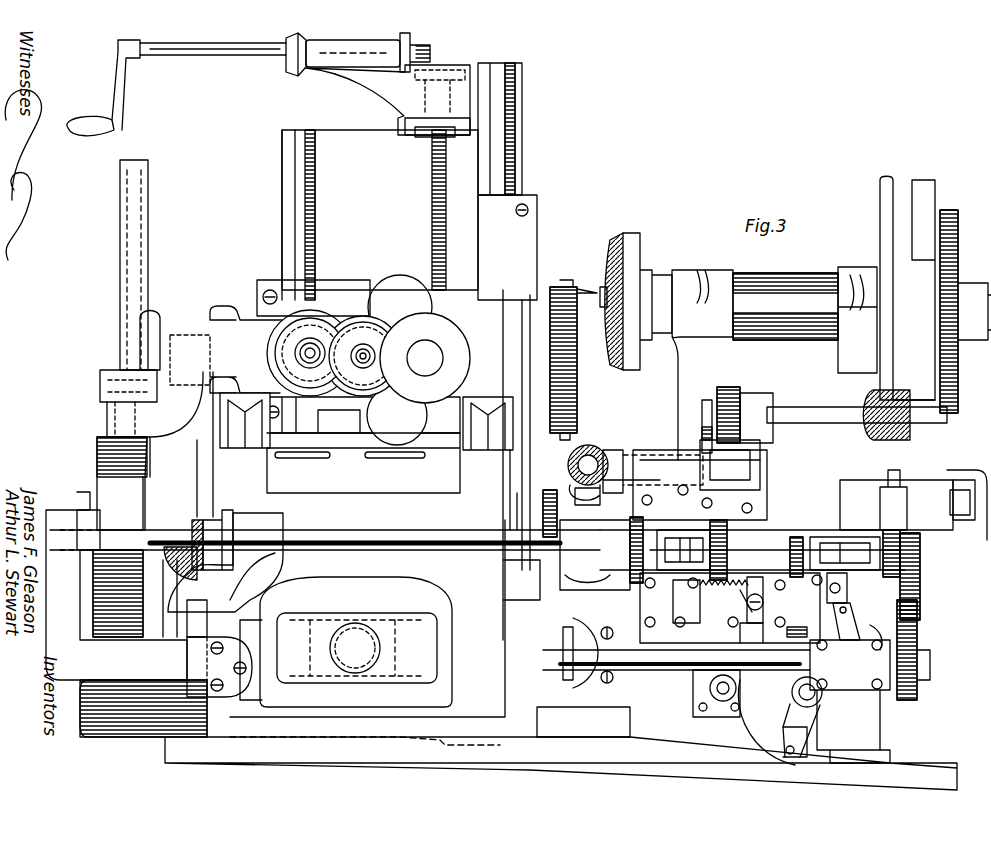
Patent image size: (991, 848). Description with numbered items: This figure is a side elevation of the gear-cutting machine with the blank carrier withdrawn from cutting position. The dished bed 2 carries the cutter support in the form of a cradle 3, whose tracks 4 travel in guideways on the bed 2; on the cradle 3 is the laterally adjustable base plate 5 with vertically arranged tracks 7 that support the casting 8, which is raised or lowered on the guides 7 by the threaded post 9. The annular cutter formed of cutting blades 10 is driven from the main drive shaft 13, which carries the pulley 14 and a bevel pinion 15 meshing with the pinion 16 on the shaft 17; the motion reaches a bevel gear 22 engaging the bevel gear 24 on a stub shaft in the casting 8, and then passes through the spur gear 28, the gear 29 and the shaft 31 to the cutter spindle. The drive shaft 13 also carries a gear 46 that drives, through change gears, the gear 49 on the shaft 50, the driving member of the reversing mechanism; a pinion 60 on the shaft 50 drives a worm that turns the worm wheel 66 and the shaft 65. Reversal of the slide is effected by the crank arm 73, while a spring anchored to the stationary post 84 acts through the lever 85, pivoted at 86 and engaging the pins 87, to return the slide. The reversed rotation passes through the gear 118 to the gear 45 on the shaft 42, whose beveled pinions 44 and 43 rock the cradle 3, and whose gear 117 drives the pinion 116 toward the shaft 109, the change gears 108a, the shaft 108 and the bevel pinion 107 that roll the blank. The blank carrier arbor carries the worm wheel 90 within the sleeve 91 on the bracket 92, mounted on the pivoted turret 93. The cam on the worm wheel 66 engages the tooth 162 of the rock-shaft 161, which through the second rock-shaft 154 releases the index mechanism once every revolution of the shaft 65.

The dished bed 2 is at (438, 490).
The cradle 3 is at (363, 463).
The tracks 4 is at (366, 421).
The base plate 5 is at (380, 210).
The vertically arranged tracks 7 is at (500, 178).
The casting 8 is at (335, 360).
The threaded post 9 is at (440, 196).
The cutting blades 10 is at (580, 434).
The main drive shaft 13 is at (160, 528).
The pulley 14 is at (120, 537).
The bevel pinion 15 is at (210, 518).
The pinion 16 is at (185, 570).
The shaft 17 is at (200, 600).
The bevel gear 22 is at (105, 375).
The bevel gear 24 is at (160, 322).
The spur gear 28 is at (310, 340).
The gear 29 is at (363, 356).
The shaft 31 is at (425, 355).
The shaft 42 is at (668, 660).
The beveled pinion 43 is at (355, 625).
The beveled pinion 44 is at (378, 628).
The gear 45 is at (905, 697).
The gear 46 is at (645, 520).
The gear 49 is at (550, 495).
The shaft 50 is at (770, 548).
The pinion 60 is at (905, 548).
The shaft 65 is at (815, 697).
The worm wheel 66 is at (779, 722).
The crank arm 73 is at (850, 608).
The stationary post 84 is at (719, 598).
The lever 85 is at (824, 588).
The pivot 86 is at (763, 603).
The pin 87 is at (745, 595).
The worm wheel 90 is at (949, 215).
The sleeve 91 is at (798, 306).
The bracket 92 is at (774, 363).
The turret 93 is at (908, 500).
The bevel pinion 107 is at (870, 398).
The shaft 108 is at (795, 418).
The change gears 108a is at (740, 450).
The shaft 109 is at (584, 446).
The pinion 116 is at (585, 687).
The gear 117 is at (567, 685).
The gear 118 is at (915, 570).
The second rock-shaft 154 is at (968, 530).
The rock-shaft 161 is at (718, 695).
The tooth 162 is at (730, 700).